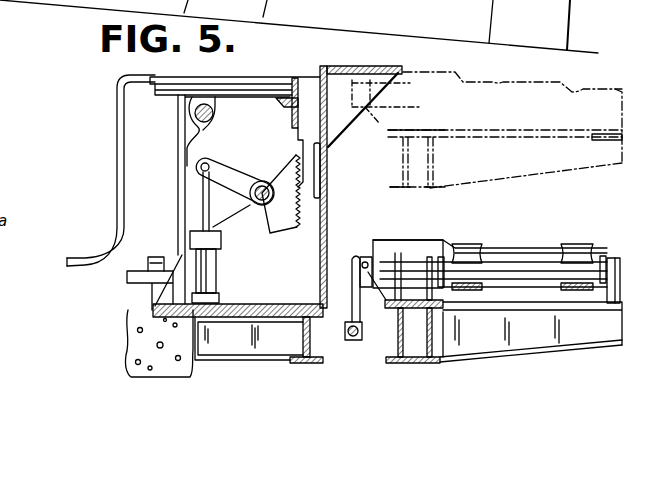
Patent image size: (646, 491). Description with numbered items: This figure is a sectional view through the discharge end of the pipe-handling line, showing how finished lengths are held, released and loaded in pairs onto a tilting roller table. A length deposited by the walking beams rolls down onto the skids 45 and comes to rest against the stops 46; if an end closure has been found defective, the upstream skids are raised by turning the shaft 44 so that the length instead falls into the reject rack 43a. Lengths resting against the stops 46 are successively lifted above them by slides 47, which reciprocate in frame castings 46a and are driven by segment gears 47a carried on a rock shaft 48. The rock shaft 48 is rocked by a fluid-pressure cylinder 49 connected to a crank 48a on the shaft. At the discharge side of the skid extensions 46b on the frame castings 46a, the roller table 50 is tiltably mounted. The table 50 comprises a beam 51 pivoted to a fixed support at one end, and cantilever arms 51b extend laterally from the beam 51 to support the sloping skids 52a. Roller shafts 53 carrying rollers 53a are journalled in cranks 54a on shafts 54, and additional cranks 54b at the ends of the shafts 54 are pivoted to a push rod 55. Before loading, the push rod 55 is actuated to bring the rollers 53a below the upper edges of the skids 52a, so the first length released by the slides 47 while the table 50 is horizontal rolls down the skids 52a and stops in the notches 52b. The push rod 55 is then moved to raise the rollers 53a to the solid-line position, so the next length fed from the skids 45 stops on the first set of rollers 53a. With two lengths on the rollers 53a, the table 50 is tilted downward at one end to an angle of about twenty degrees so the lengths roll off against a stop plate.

The reject rack 43a is at (116, 153).
The shaft 44 is at (194, 114).
The skids 45 is at (245, 76).
The stops 46 is at (322, 67).
The frame castings 46a is at (326, 205).
The skid extensions 46b is at (370, 71).
The slides 47 is at (307, 120).
The segment gears 47a is at (283, 224).
The rock shaft 48 is at (262, 181).
The crank 48a is at (222, 174).
The fluid-pressure cylinder 49 is at (214, 279).
The roller table 50 is at (546, 366).
The beam 51 is at (400, 330).
The cantilever arms 51b is at (500, 342).
The sloping skids 52a is at (502, 83).
The notches 52b is at (577, 92).
The roller shafts 53 is at (540, 260).
The rollers 53a is at (471, 246).
The shafts 54 is at (410, 265).
The cranks 54a is at (438, 257).
The cranks 54b is at (356, 268).
The push rod 55 is at (347, 333).